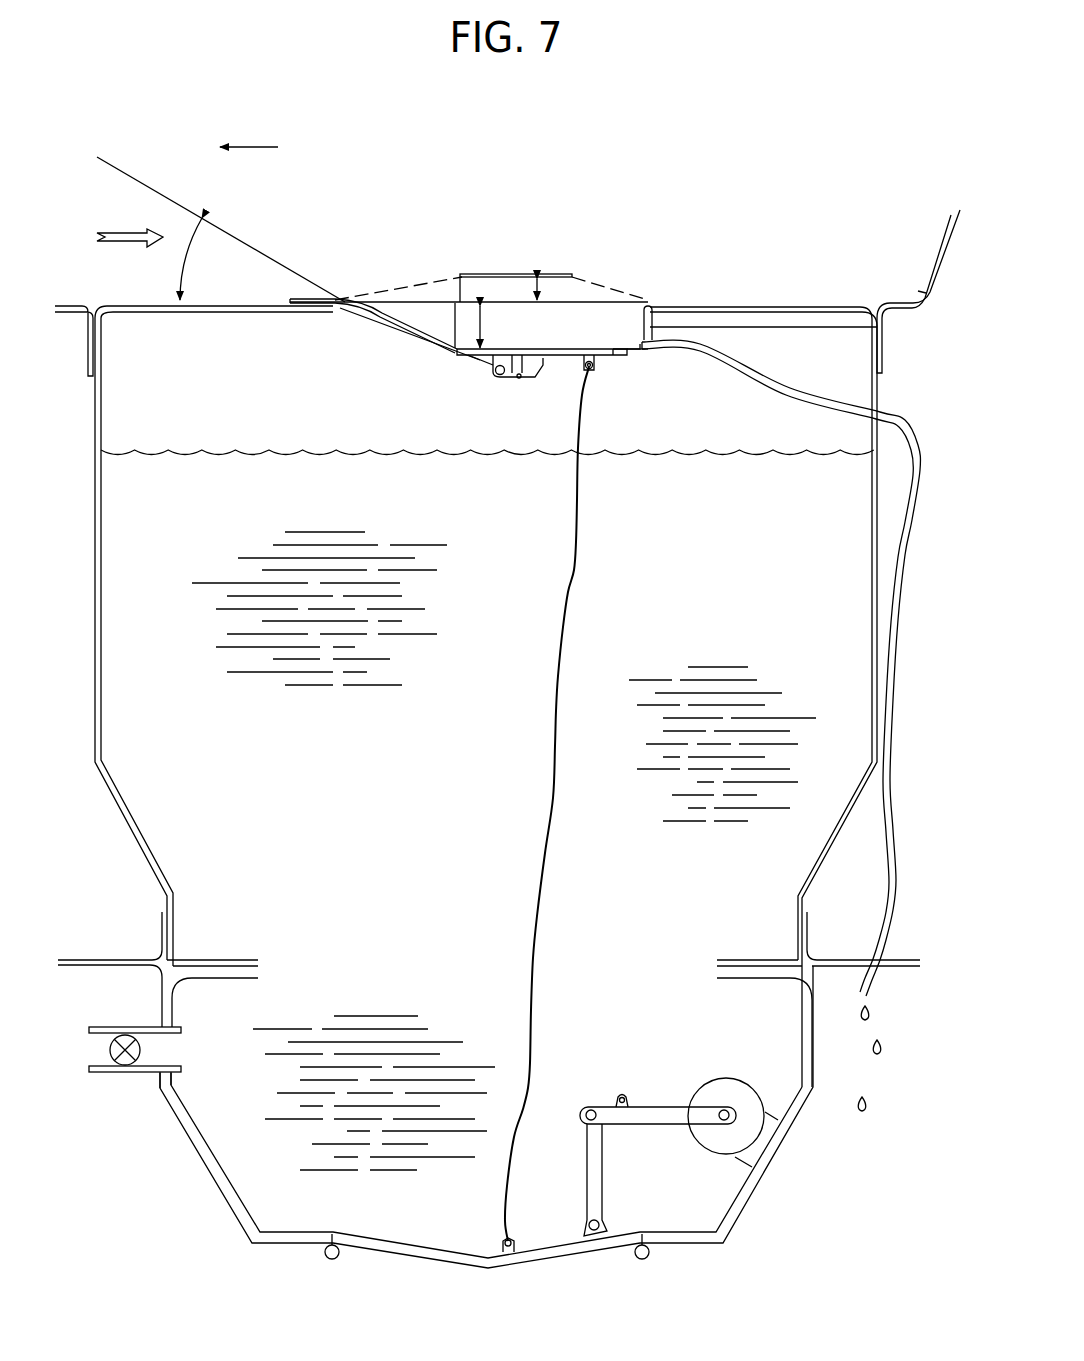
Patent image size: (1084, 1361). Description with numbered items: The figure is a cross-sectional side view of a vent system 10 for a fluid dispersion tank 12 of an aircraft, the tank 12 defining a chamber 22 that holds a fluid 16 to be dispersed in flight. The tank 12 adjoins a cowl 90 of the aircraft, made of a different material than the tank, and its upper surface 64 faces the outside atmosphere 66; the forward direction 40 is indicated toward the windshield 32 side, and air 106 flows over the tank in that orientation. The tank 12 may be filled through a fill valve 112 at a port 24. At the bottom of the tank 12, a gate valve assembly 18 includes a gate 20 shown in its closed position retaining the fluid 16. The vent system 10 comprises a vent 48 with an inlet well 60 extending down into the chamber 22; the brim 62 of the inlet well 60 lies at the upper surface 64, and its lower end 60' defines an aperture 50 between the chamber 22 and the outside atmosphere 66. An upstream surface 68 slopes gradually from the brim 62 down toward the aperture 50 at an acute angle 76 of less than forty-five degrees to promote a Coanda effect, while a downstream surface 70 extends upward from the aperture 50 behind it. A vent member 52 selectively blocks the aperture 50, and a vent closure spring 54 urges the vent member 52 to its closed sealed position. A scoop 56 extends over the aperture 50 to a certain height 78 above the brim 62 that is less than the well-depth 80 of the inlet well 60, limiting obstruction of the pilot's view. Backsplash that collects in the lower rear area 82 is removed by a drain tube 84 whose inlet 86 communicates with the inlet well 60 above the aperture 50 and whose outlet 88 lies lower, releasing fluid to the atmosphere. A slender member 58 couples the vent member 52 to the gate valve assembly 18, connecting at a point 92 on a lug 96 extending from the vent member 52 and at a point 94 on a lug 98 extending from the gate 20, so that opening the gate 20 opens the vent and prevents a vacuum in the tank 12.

The vent system 10 is at (677, 158).
The fluid dispersion tank 12 is at (782, 306).
The fluid 16 is at (310, 450).
The gate valve assembly 18 is at (212, 1178).
The gate 20 is at (446, 1260).
The chamber 22 is at (177, 392).
The port 24 is at (99, 1073).
The windshield 32 is at (936, 248).
The forward direction 40 is at (258, 147).
The vent 48 is at (415, 333).
The aperture 50 is at (528, 302).
The vent member 52 is at (570, 349).
The vent closure spring 54 is at (492, 362).
The scoop 56 is at (522, 274).
The slender member 58 is at (574, 573).
The inlet well 60 is at (503, 327).
The lower end of inlet well 60' is at (470, 266).
The brim 62 is at (335, 299).
The upper surface 64 is at (263, 305).
The outside atmosphere 66 is at (257, 203).
The upstream surface 68 is at (405, 310).
The downstream surface 70 is at (620, 285).
The acute angle 76 is at (186, 270).
The certain height 78 is at (545, 290).
The well-depth 80 is at (485, 328).
The lower rear area 82 is at (636, 353).
The drain tube 84 is at (904, 560).
The inlet 86 is at (645, 343).
The outlet 88 is at (870, 1000).
The cowl 90 is at (66, 306).
The point 92 is at (596, 368).
The point 94 is at (503, 1245).
The lug 96 is at (581, 366).
The lug 98 is at (512, 1240).
The air 106 is at (125, 232).
The fill valve 112 is at (140, 1050).